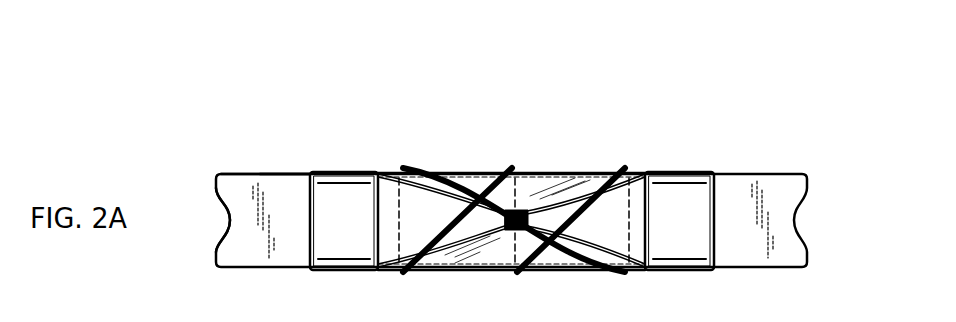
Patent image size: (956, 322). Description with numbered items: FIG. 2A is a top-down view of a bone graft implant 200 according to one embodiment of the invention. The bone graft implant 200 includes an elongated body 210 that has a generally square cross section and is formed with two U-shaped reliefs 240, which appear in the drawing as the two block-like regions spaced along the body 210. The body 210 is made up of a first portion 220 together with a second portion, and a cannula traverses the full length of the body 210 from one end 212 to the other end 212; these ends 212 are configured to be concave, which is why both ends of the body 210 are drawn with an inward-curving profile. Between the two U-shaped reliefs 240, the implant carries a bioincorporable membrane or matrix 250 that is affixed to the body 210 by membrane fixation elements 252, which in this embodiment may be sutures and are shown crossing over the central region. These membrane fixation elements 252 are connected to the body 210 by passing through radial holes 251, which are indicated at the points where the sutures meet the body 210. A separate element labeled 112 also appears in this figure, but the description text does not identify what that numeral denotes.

The bone graft implant 200 is at (853, 139).
The tube 112 is at (795, 224).
The body 210 is at (283, 173).
The first portion 220 is at (223, 173).
The end 212 is at (223, 236).
The U-shaped relief 240 is at (322, 173).
The bioincorporable membrane or matrix 250 is at (348, 173).
The radial hole 251 is at (394, 171).
The membrane fixation element 252 is at (483, 171).